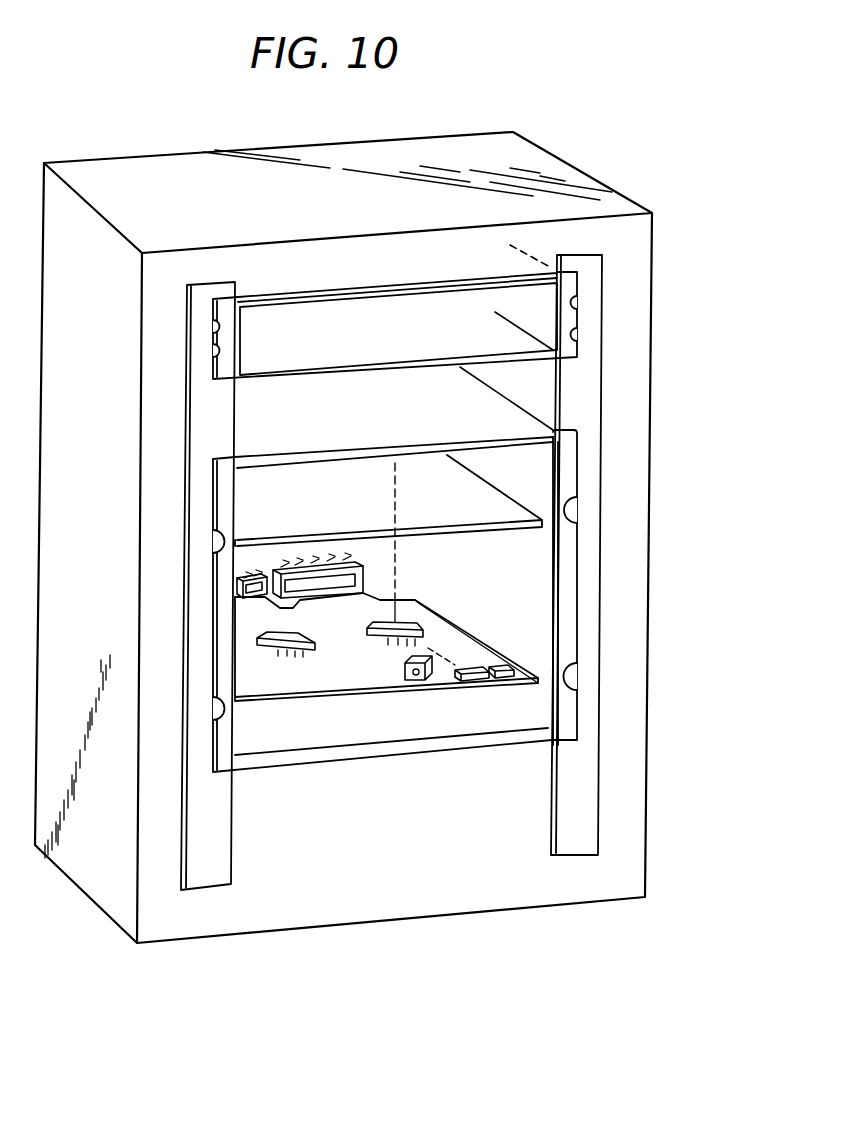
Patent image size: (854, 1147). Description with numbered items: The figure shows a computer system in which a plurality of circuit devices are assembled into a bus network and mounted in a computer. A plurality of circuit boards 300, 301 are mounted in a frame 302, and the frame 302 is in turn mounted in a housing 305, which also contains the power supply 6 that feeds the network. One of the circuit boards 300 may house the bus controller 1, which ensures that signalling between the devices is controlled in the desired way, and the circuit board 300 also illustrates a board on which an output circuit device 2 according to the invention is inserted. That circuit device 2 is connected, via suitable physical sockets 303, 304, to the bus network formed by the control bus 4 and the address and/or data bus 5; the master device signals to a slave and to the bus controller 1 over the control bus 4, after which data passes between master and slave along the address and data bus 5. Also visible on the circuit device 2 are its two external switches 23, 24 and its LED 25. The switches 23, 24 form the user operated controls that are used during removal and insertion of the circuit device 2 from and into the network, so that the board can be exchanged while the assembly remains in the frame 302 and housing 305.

The bus controller 1 is at (456, 492).
The circuit device 2 is at (299, 686).
The control bus 4 is at (254, 568).
The address and/or data bus 5 is at (292, 560).
The power source 6 is at (352, 287).
The external switch 23 is at (489, 664).
The external switch 24 is at (462, 667).
The LED 25 is at (430, 681).
The circuit board 300 is at (523, 497).
The circuit board 301 is at (528, 672).
The frame 302 is at (563, 570).
The physical socket 303 is at (290, 567).
The physical socket 304 is at (263, 577).
The housing 305 is at (497, 897).